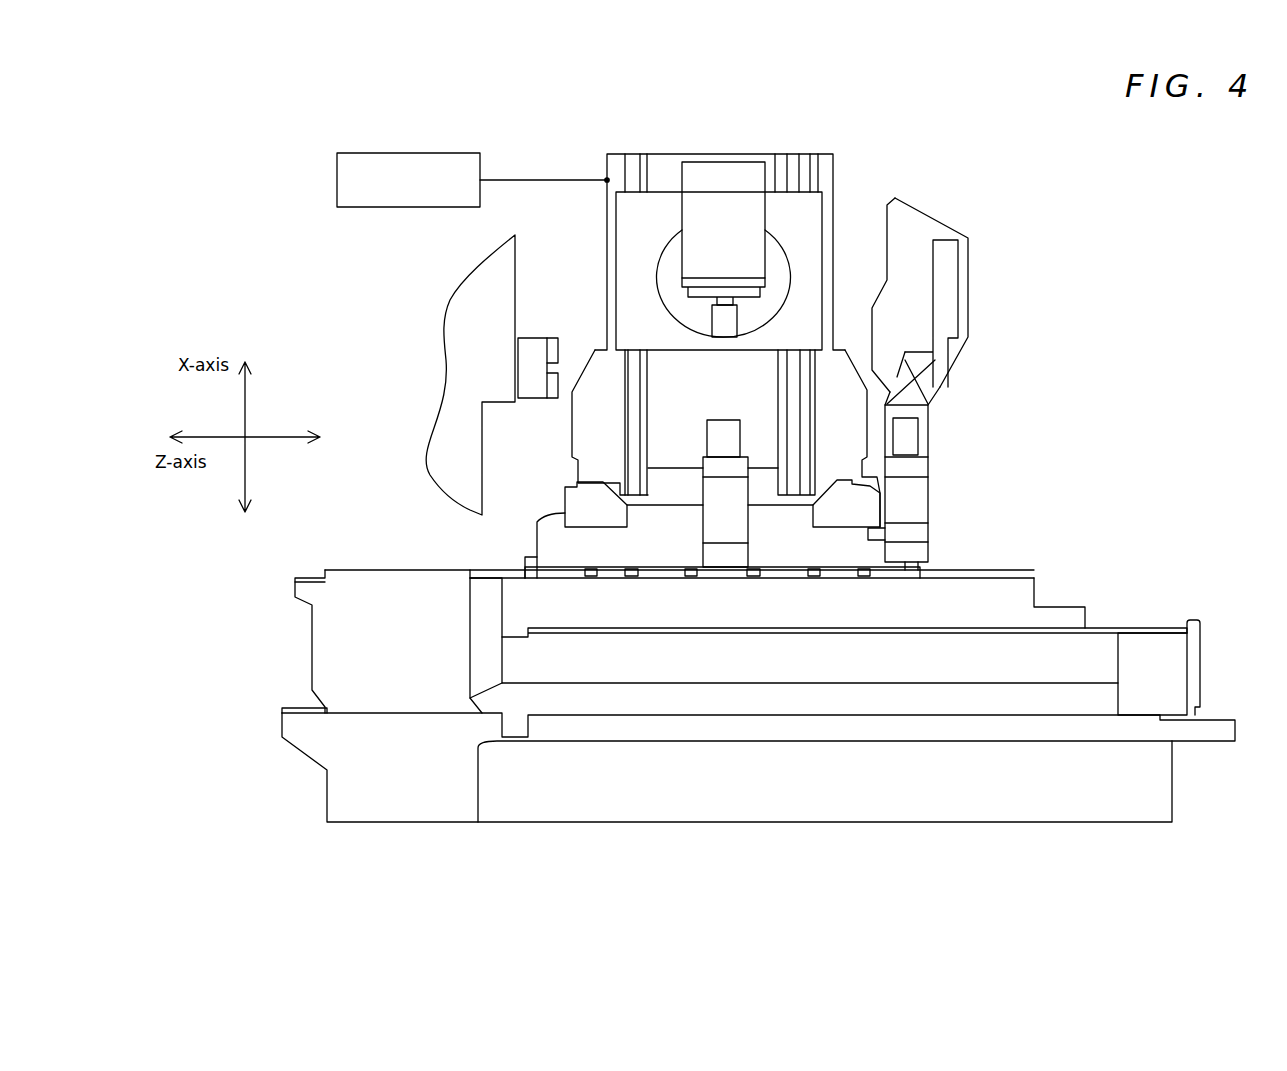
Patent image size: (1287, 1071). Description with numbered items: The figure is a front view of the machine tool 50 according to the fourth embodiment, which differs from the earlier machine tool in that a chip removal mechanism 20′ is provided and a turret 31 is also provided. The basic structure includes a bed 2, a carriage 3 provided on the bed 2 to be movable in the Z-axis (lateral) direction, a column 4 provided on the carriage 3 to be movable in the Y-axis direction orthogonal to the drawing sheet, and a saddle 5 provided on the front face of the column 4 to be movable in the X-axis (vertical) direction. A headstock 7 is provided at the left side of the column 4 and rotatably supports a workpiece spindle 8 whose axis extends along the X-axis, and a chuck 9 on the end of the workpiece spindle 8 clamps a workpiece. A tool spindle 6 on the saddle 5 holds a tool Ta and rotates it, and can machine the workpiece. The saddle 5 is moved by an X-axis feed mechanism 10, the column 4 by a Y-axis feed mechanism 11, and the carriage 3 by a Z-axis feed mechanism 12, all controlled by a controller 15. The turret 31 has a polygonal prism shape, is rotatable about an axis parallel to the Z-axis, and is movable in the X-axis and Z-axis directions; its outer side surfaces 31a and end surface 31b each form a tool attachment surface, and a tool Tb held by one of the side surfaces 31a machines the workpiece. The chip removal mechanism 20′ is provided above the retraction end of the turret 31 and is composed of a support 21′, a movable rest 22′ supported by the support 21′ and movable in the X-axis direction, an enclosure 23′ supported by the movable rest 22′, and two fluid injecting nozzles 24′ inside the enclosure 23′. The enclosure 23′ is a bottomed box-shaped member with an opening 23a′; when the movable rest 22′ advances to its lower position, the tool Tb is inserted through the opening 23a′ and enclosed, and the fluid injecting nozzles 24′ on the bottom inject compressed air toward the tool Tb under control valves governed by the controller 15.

The bed 2 is at (383, 570).
The carriage 3 is at (537, 547).
The column 4 is at (728, 154).
The saddle 5 is at (608, 283).
The tool spindle 6 is at (693, 168).
The headstock 7 is at (463, 278).
The workpiece spindle 8 is at (518, 347).
The chuck 9 is at (522, 377).
The X-axis feed mechanism 10 is at (712, 320).
The Y-axis feed mechanism 11 is at (556, 484).
The Z-axis feed mechanism 12 is at (1052, 579).
The controller 15 is at (408, 153).
The chip removal mechanism 20′ is at (1007, 296).
The support 21′ is at (942, 227).
The movable rest 22′ is at (888, 392).
The enclosure 23′ is at (926, 418).
The opening 23a′ is at (920, 459).
The fluid injecting nozzles 24′ is at (935, 395).
The turret 31 is at (973, 484).
The outer side surfaces 31a is at (917, 510).
The end surface 31b is at (928, 523).
The machine tool 50 is at (1119, 257).
The tool Ta is at (733, 328).
The tool Tb is at (918, 440).